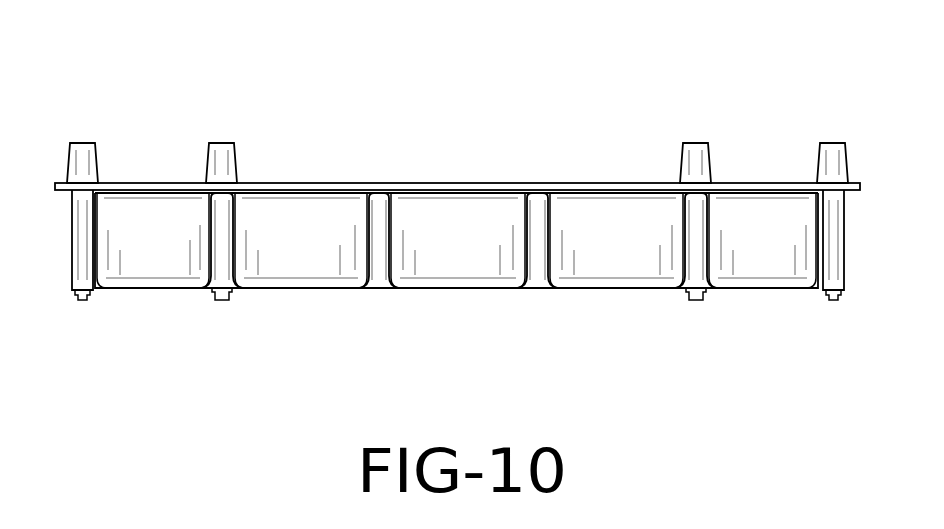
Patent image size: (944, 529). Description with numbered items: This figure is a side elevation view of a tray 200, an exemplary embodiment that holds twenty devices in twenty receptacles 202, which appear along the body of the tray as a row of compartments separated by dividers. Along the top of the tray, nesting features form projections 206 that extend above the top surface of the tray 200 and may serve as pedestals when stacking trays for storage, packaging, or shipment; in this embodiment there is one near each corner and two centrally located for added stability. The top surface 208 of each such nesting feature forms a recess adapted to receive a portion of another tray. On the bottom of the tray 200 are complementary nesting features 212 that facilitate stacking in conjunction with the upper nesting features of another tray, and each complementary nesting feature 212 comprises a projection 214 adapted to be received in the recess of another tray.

The tray 200 is at (452, 138).
The receptacle 202 is at (152, 290).
The projection 206 is at (99, 162).
The top surface 208 is at (84, 143).
The complementary nesting feature 212 is at (81, 302).
The projection 214 is at (72, 302).